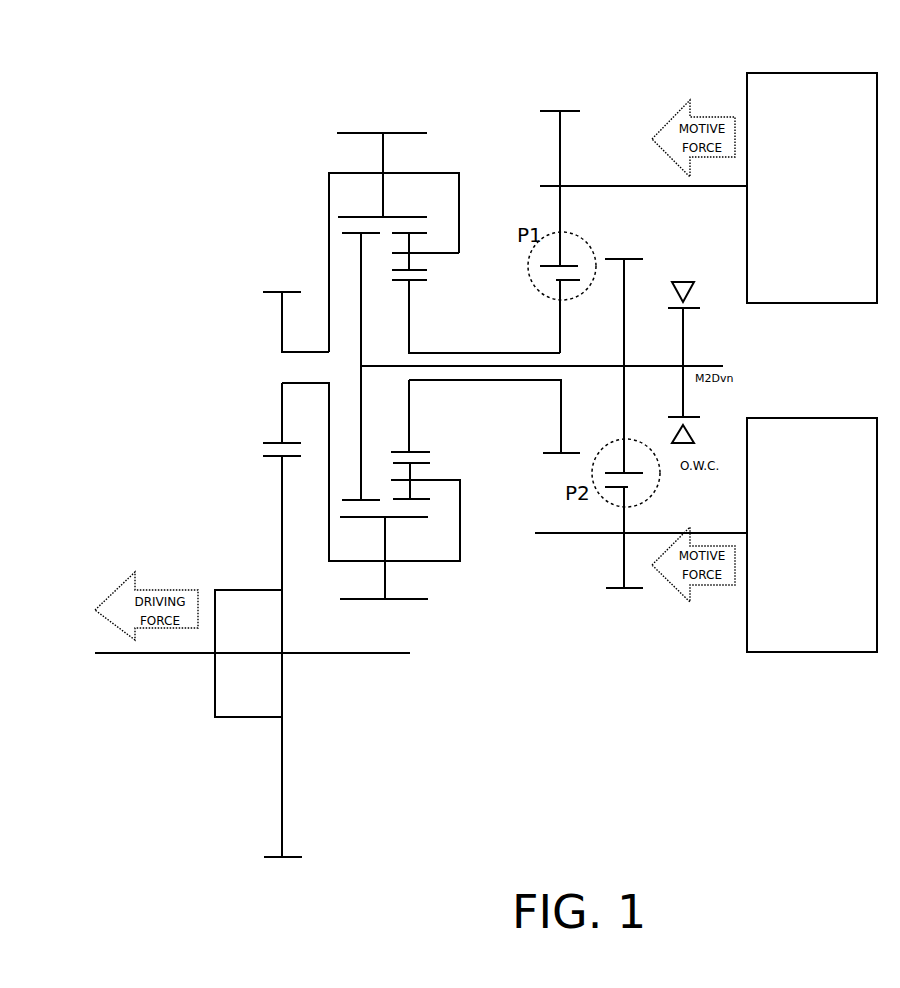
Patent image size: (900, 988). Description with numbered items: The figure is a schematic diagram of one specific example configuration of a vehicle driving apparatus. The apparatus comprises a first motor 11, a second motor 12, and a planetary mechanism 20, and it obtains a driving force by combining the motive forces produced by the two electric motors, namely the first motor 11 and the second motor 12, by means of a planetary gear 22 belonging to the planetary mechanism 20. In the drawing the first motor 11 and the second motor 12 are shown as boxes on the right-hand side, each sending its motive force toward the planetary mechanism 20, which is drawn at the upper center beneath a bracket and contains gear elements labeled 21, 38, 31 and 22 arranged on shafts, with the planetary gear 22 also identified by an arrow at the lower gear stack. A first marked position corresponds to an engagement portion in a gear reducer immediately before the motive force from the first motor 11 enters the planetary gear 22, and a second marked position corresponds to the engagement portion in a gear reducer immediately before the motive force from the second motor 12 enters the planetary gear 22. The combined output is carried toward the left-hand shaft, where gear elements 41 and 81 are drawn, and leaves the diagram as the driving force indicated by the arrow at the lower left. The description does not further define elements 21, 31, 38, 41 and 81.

The first motor 11 is at (840, 62).
The second motor 12 is at (841, 410).
The planetary mechanism 20 is at (639, 83).
The carrier gear 21 is at (382, 209).
The planetary gear 22 is at (500, 650).
The sun gear 31 is at (476, 316).
The sun gear 38 is at (359, 366).
The output gear 41 is at (279, 413).
The output gear 81 is at (279, 656).